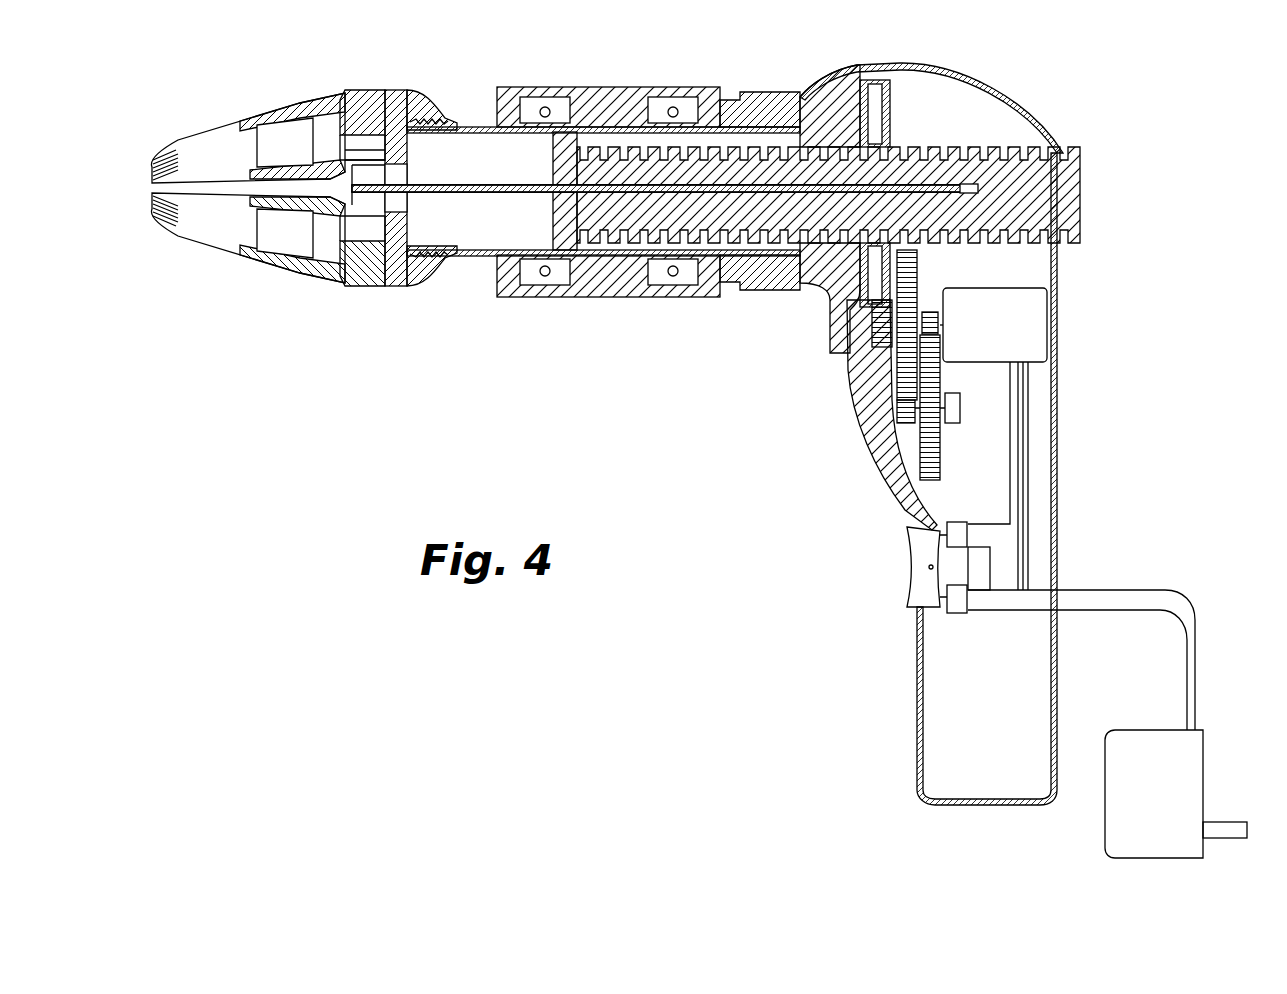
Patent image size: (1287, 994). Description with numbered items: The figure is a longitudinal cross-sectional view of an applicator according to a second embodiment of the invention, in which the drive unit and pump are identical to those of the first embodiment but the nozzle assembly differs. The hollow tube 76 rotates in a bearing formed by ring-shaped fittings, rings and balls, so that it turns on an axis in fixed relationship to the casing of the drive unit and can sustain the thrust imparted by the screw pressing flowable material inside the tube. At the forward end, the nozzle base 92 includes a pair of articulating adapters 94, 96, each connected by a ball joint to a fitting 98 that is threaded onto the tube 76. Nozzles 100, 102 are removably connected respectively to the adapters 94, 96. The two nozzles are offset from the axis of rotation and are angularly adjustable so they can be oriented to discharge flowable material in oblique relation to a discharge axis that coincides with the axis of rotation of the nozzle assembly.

The hollow tube 76 is at (483, 253).
The nozzle base 92 is at (396, 82).
The articulating adapter 94 is at (330, 103).
The articulating adapter 96 is at (328, 273).
The fitting 98 is at (420, 283).
The nozzle 100 is at (215, 123).
The nozzle 102 is at (217, 250).